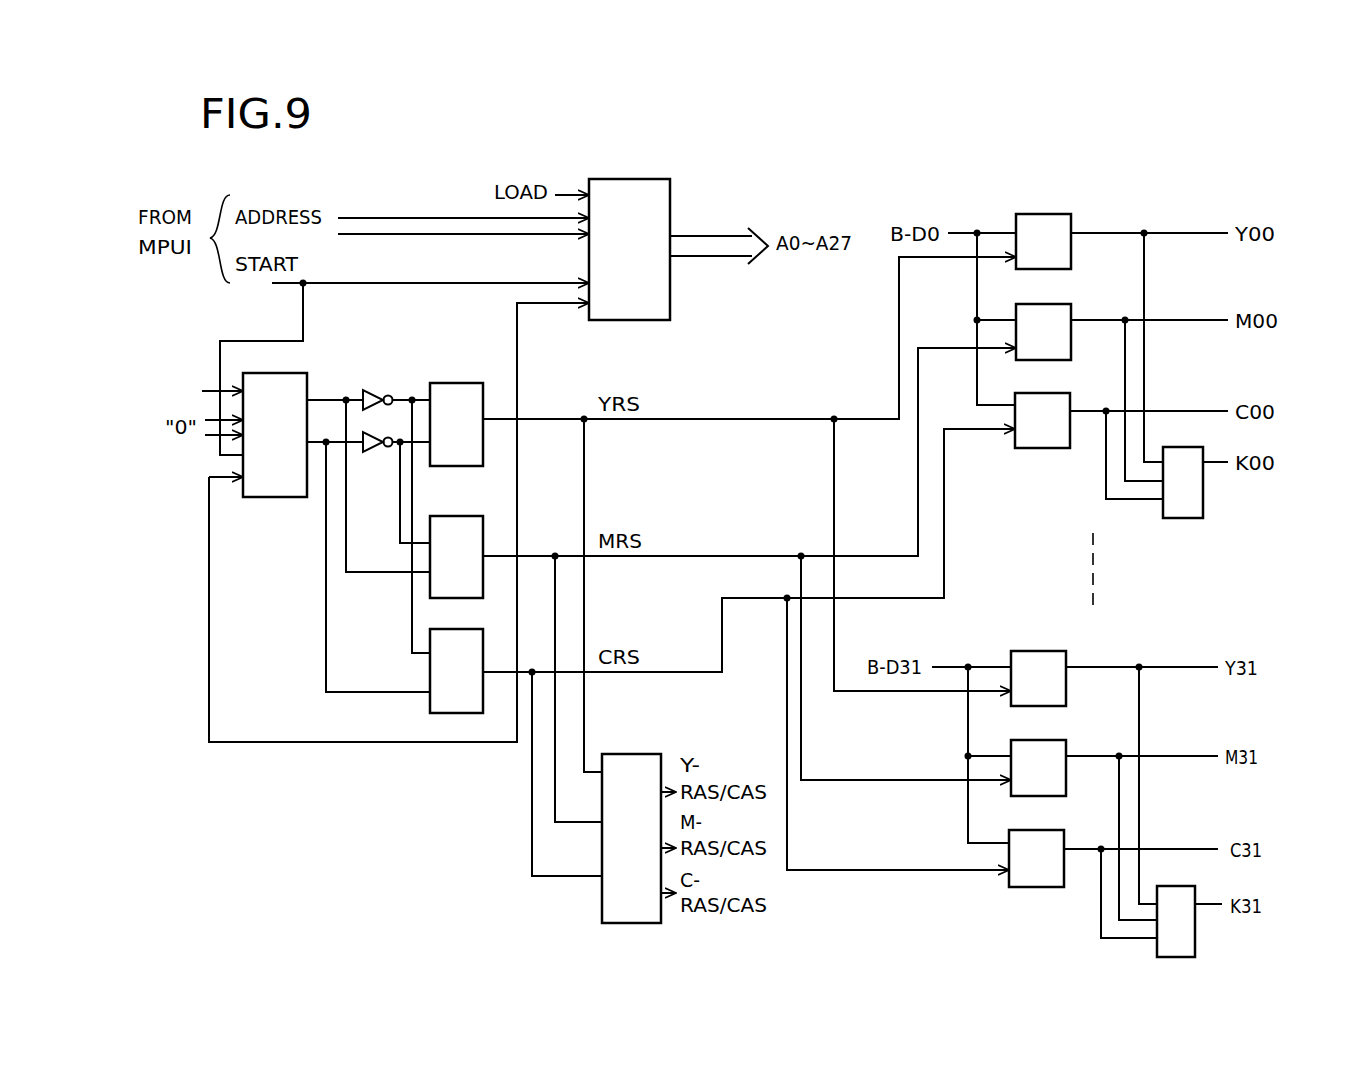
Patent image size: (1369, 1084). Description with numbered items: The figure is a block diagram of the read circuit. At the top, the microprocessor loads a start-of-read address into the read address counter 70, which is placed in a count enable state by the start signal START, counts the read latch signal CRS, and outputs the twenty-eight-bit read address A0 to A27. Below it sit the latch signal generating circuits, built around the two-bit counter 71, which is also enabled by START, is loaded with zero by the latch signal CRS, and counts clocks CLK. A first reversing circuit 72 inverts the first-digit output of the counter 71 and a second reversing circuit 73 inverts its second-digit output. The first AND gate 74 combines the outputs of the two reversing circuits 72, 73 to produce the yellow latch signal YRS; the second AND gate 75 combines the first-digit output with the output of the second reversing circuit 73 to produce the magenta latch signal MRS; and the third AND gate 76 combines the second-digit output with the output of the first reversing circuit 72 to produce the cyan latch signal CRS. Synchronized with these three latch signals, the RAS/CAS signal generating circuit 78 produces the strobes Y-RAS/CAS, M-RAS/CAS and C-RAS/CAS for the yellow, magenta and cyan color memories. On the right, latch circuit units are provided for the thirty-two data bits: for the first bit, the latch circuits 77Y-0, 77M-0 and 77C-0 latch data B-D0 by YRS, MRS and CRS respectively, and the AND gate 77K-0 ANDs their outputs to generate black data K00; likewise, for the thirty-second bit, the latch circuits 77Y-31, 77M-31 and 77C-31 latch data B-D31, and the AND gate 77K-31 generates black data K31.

The read address counter 70 is at (660, 179).
The 2-bit counter 71 is at (300, 373).
The first reversing circuit 72 is at (377, 391).
The second reversing circuit 73 is at (378, 452).
The first AND gate 74 is at (465, 383).
The second AND gate 75 is at (483, 518).
The third AND gate 76 is at (430, 708).
The RAS/CAS signal generating circuit 78 is at (658, 754).
The first latch circuit 77Y-0 is at (1054, 214).
The first latch circuit 77M-0 is at (1071, 306).
The first latch circuit 77C-0 is at (1070, 395).
The AND gate 77K-0 is at (1203, 514).
The first latch circuit 77Y-31 is at (1040, 651).
The first latch circuit 77M-31 is at (1011, 748).
The first latch circuit 77C-31 is at (1018, 887).
The AND gate 77K-31 is at (1195, 940).